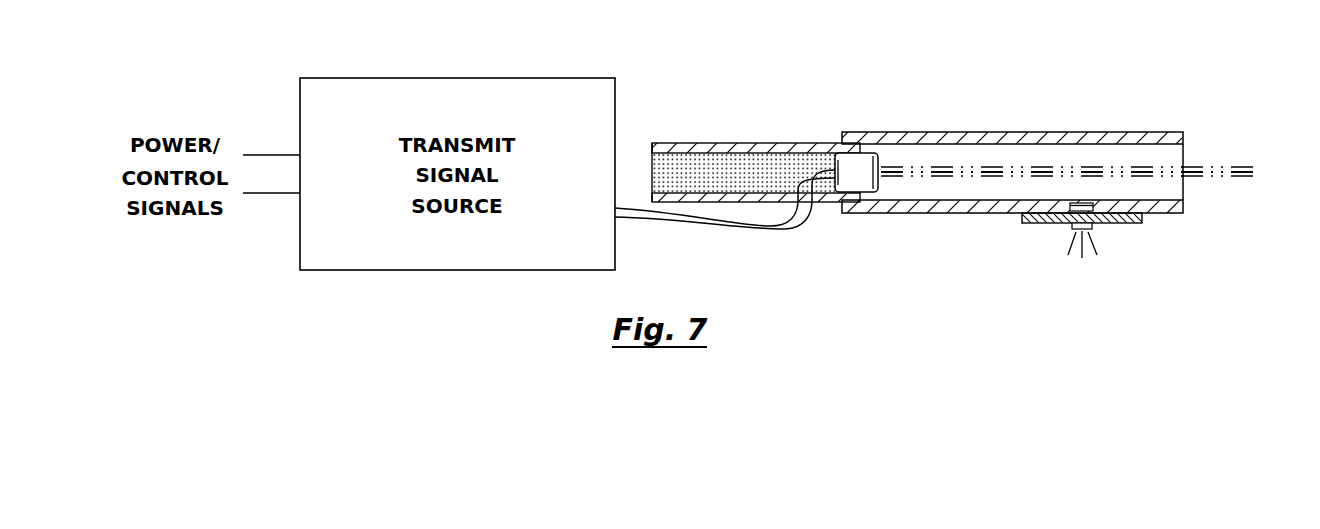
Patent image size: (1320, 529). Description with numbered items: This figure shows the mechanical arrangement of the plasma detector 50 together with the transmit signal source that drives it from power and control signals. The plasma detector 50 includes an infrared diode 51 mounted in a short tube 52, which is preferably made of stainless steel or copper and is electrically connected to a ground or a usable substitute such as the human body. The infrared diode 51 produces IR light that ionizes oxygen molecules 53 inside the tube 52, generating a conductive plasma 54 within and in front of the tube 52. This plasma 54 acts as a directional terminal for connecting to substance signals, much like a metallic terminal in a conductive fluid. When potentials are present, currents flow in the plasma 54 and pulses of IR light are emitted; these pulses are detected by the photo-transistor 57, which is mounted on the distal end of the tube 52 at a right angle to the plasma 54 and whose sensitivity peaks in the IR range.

The plasma detector 50 is at (798, 78).
The infrared diode 51 is at (865, 186).
The tube 52 is at (1024, 132).
The oxygen molecules 53 is at (926, 168).
The plasma 54 is at (1208, 163).
The photo-transistor 57 is at (1093, 228).